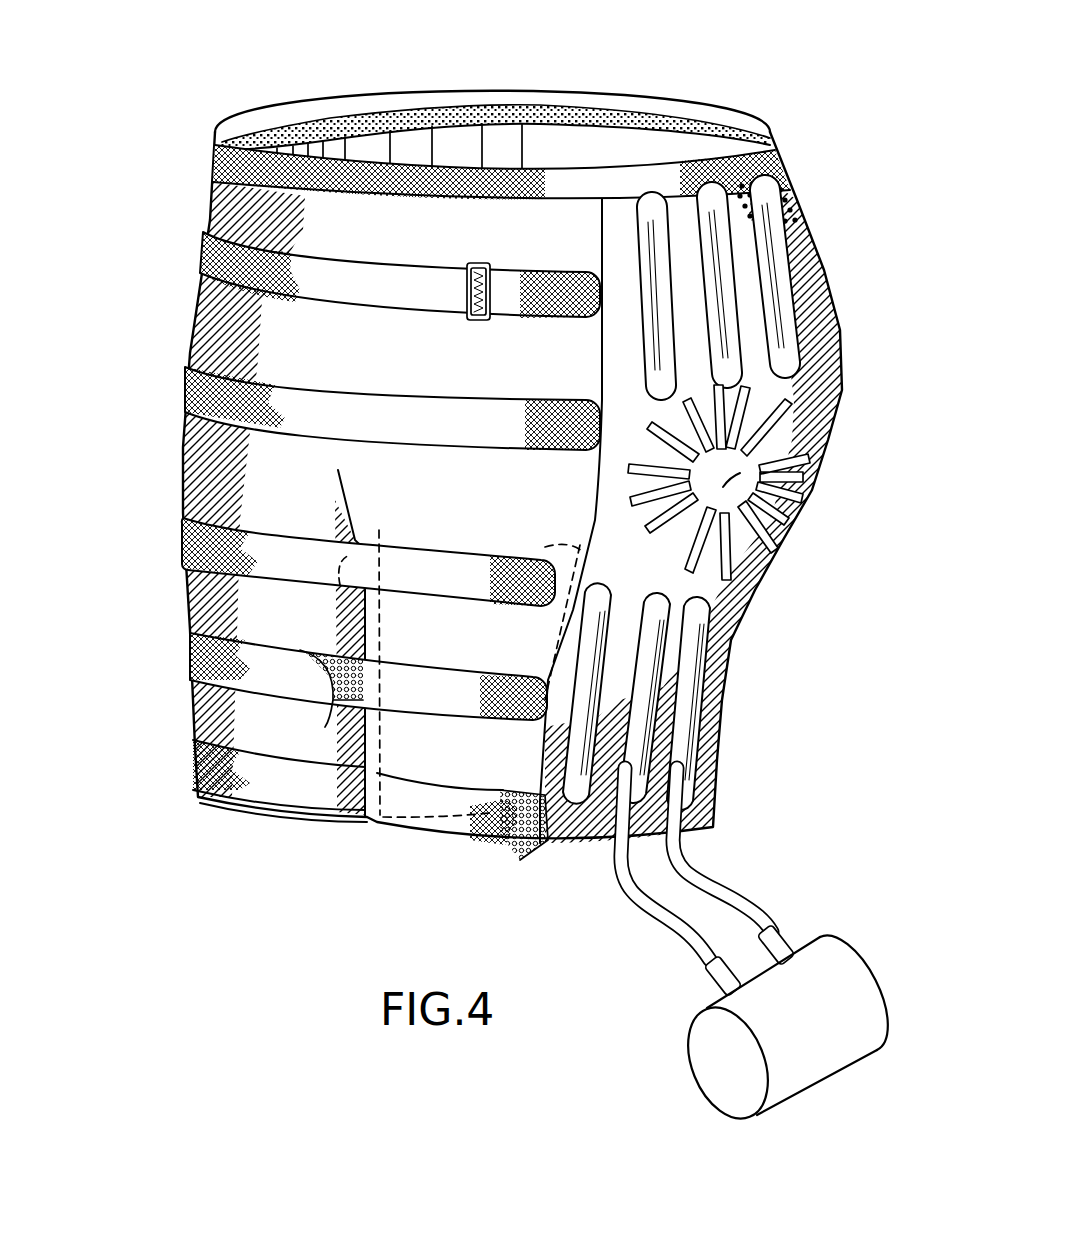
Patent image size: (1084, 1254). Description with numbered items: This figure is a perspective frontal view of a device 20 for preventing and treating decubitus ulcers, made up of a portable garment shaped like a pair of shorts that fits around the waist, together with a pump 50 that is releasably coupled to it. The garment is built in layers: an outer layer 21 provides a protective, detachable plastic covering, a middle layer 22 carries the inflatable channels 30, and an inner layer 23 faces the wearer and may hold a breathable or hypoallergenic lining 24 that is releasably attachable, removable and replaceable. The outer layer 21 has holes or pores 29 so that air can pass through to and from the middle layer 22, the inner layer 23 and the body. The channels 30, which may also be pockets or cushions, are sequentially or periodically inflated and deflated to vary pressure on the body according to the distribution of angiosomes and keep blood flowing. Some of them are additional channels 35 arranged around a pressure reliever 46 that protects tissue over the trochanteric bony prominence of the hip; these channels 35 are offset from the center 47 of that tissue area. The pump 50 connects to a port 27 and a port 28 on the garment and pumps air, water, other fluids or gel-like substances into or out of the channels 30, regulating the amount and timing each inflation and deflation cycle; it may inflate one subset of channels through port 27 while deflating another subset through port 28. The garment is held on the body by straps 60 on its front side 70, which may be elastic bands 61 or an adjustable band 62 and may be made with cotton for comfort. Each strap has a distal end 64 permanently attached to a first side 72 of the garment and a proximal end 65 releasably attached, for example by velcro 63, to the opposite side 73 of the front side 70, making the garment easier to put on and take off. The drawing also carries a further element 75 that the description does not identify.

The device 20 is at (262, 860).
The outer layer 21 is at (742, 128).
The middle layer 22 is at (572, 110).
The inner layer 23 is at (522, 140).
The lining 24 is at (432, 145).
The seam 75 is at (432, 130).
The port 27 is at (710, 967).
The port 28 is at (780, 933).
The pores 29 is at (790, 210).
The channels 30 is at (740, 302).
The additional channels 35 is at (810, 480).
The pressure reliever 46 is at (745, 475).
The center 47 is at (723, 487).
The pump 50 is at (812, 1050).
The straps 60 is at (225, 267).
The elastic bands 61 is at (195, 380).
The adjustable band 62 is at (215, 256).
The velcro 63 is at (348, 575).
The distal end 64 is at (205, 240).
The proximal end 65 is at (605, 285).
The front side 70 is at (365, 241).
The first side 72 is at (213, 212).
The opposite side 73 is at (532, 790).